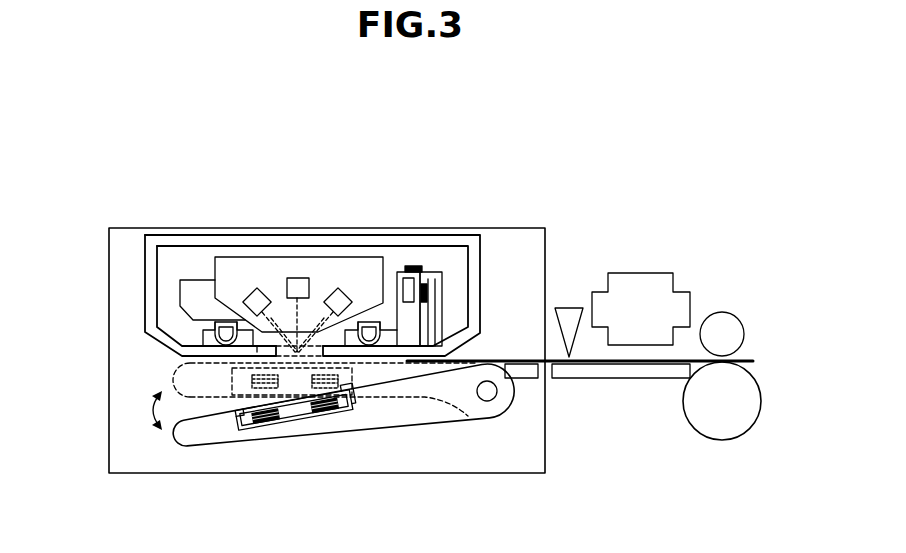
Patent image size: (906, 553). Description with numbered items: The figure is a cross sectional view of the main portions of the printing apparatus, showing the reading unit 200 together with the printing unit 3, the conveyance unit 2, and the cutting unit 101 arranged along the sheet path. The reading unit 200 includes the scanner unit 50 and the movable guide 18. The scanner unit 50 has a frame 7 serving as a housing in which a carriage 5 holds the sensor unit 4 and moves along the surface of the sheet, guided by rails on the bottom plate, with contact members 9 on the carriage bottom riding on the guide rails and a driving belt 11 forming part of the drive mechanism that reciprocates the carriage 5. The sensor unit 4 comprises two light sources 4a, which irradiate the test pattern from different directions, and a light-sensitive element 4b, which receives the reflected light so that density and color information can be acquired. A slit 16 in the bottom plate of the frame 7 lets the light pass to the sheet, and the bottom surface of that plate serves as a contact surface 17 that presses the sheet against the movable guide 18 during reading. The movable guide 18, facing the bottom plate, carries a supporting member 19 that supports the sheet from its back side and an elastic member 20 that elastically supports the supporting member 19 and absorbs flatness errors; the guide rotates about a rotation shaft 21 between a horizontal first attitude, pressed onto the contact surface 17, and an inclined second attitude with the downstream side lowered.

The reading unit 200 is at (90, 181).
The scanner unit 50 is at (492, 257).
The carriage 5 is at (200, 290).
The sensor unit 4 is at (335, 262).
The light sources 4a is at (256, 289).
The light-sensitive element 4b is at (298, 278).
The slit 16 is at (293, 350).
The contact members 9 is at (226, 330).
The frame 7 is at (437, 241).
The driving belt 11 is at (424, 270).
The movable guide 18 is at (433, 413).
The rotation shaft 21 is at (496, 392).
The supporting member 19 is at (340, 408).
The elastic member 20 is at (320, 414).
The contact surface 17 is at (257, 353).
The cutting unit 101 is at (566, 306).
The printing unit 3 is at (645, 272).
The conveyance unit 2 is at (758, 400).